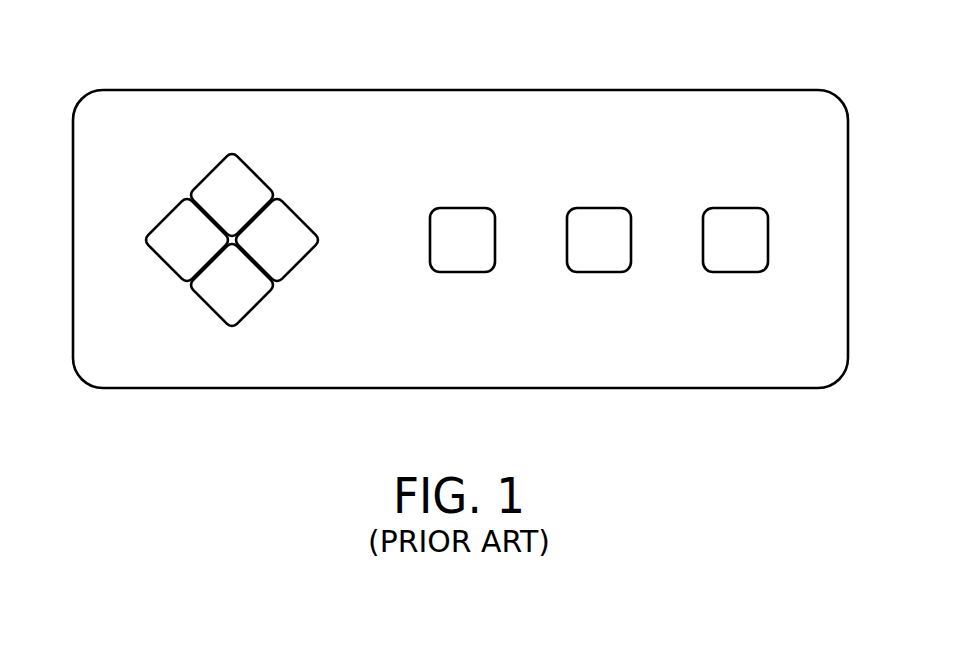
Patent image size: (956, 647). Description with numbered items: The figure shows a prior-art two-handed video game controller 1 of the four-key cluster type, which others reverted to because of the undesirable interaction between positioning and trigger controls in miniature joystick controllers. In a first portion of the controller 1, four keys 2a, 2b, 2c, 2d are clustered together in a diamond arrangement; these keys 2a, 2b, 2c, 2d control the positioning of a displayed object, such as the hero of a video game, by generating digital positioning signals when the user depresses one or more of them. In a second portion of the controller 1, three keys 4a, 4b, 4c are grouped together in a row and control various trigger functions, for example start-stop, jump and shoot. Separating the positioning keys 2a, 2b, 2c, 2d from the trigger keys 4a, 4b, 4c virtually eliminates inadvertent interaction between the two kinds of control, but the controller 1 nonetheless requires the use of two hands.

The controller 1 is at (463, 60).
The key 2a is at (207, 308).
The key 2b is at (163, 262).
The key 2c is at (212, 170).
The key 2d is at (303, 262).
The key 4a is at (462, 273).
The key 4b is at (598, 273).
The key 4c is at (738, 273).